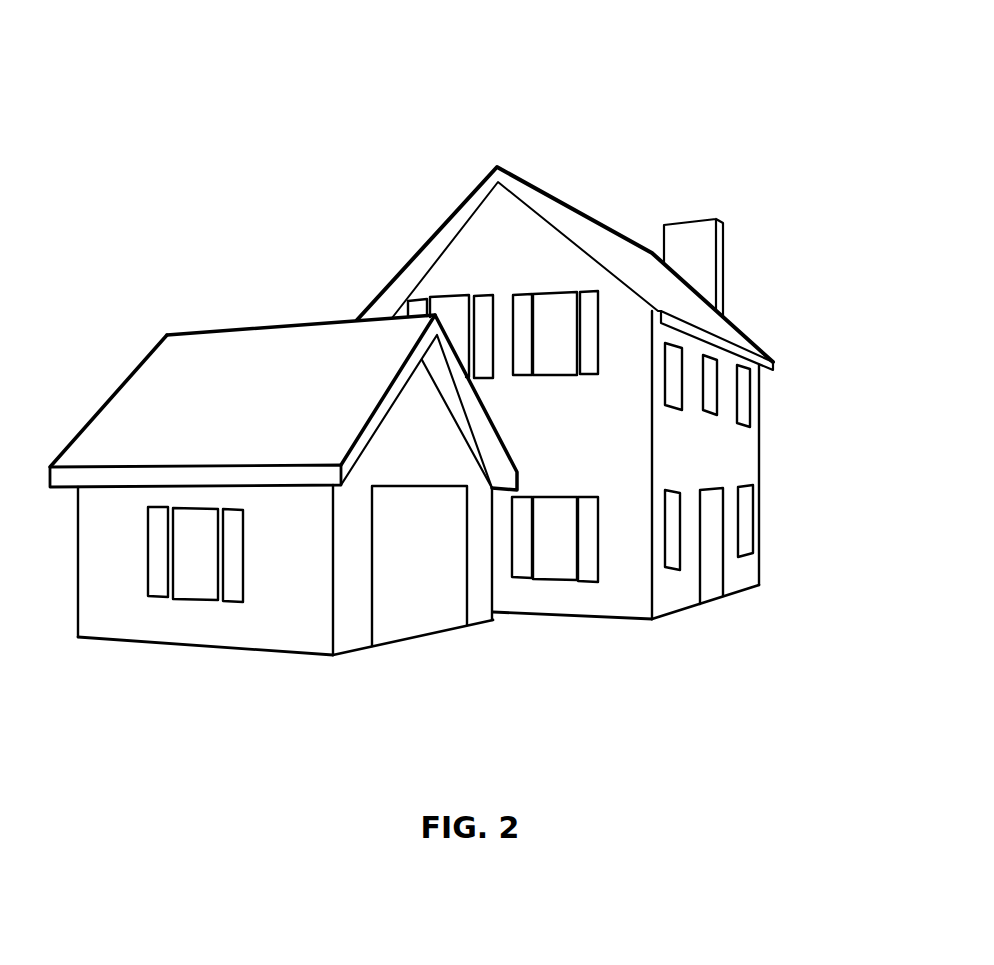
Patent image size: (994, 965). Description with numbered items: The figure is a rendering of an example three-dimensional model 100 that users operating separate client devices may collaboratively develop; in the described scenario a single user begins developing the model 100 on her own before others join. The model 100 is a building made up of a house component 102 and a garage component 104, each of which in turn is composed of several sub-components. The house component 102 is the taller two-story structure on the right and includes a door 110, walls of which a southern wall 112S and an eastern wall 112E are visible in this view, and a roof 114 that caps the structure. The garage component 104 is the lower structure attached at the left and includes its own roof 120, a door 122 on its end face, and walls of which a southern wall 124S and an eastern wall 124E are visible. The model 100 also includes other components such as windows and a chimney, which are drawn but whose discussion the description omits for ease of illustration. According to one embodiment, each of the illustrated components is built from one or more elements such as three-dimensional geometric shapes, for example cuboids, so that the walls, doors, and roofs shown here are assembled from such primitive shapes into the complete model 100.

The model 100 is at (538, 66).
The house component 102 is at (587, 215).
The garage component 104 is at (258, 326).
The door 110 is at (708, 575).
The eastern wall 112E is at (750, 452).
The southern wall 112S is at (593, 597).
The roof 114 is at (730, 332).
The roof 120 is at (112, 420).
The door 122 is at (418, 610).
The eastern wall 124E is at (348, 623).
The southern wall 124S is at (145, 623).